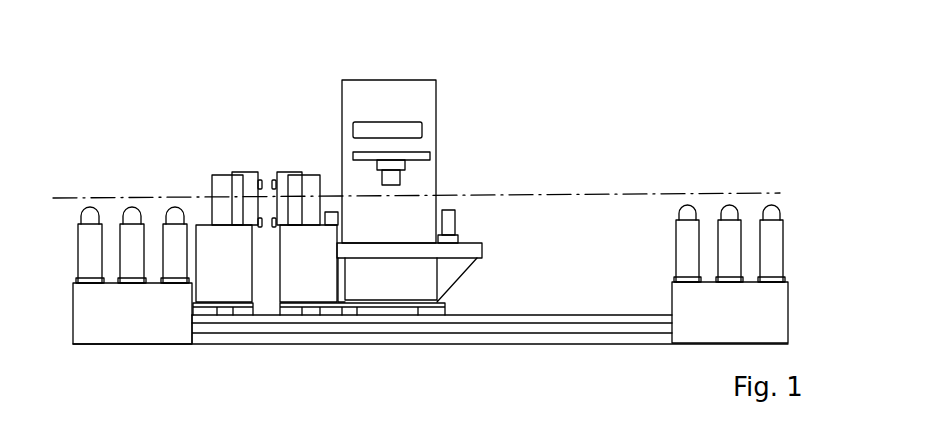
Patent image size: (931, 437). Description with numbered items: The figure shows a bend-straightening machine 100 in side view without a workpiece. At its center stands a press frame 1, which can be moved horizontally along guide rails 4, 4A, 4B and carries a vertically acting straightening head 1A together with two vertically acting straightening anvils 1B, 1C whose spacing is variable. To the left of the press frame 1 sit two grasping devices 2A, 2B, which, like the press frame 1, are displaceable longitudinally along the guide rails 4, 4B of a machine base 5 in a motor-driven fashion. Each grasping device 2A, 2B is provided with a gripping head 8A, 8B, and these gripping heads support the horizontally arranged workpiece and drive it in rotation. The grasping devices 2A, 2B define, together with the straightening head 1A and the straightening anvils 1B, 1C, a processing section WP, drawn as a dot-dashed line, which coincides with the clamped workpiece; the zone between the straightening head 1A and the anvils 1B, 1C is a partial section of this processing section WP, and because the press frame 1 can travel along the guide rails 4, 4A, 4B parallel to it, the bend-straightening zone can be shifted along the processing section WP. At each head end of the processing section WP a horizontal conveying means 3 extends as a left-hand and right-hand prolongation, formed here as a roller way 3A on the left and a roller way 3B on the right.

The bend-straightening machine 100 is at (574, 63).
The press frame 1 is at (436, 110).
The straightening head 1A is at (400, 175).
The straightening anvil 1B is at (332, 211).
The straightening anvil 1C is at (450, 210).
The grasping device 2A is at (222, 187).
The grasping device 2B is at (312, 183).
The gripping head 8A is at (250, 170).
The gripping head 8B is at (285, 172).
The horizontal conveying means 3 is at (111, 198).
The roller way 3A is at (133, 208).
The roller way 3B is at (688, 208).
The guide rails 4 is at (540, 313).
The guide rail 4A is at (432, 319).
The guide rail 4B is at (432, 329).
The machine base 5 is at (629, 346).
The processing section WP is at (584, 189).